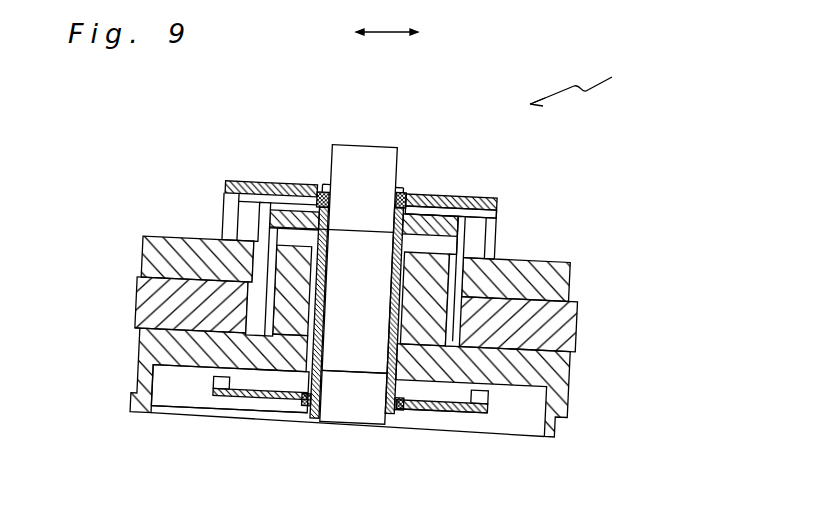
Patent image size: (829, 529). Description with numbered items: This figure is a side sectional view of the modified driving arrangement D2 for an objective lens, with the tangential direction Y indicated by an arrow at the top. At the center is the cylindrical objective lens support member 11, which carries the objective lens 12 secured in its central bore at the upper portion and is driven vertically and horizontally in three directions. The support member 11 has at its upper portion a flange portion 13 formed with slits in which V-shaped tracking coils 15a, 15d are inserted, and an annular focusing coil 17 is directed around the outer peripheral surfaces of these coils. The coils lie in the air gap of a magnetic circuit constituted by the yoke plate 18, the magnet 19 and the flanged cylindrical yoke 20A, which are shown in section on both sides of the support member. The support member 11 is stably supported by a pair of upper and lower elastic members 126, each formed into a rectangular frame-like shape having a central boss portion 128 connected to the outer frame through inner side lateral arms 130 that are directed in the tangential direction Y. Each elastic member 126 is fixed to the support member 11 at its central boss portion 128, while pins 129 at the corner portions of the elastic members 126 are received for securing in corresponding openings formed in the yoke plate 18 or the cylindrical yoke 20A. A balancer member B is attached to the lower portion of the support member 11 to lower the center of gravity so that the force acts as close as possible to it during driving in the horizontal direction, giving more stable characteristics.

The objective lens support member 11 is at (433, 197).
The objective lens 12 is at (377, 172).
The flange portion 13 is at (500, 197).
The tracking coil 15a is at (272, 187).
The tracking coil 15d is at (498, 229).
The focusing coil 17 is at (252, 184).
The yoke plate 18 is at (530, 268).
The magnet 19 is at (556, 318).
The cylindrical yoke 20A is at (553, 382).
The elastic member 126 is at (492, 199).
The central boss portion 128 is at (408, 197).
The pin 129 is at (232, 212).
The inner side lateral arm 130 is at (301, 186).
The balancer member B is at (316, 421).
The modified driving arrangement D2 is at (587, 85).
The tangential direction Y is at (397, 29).